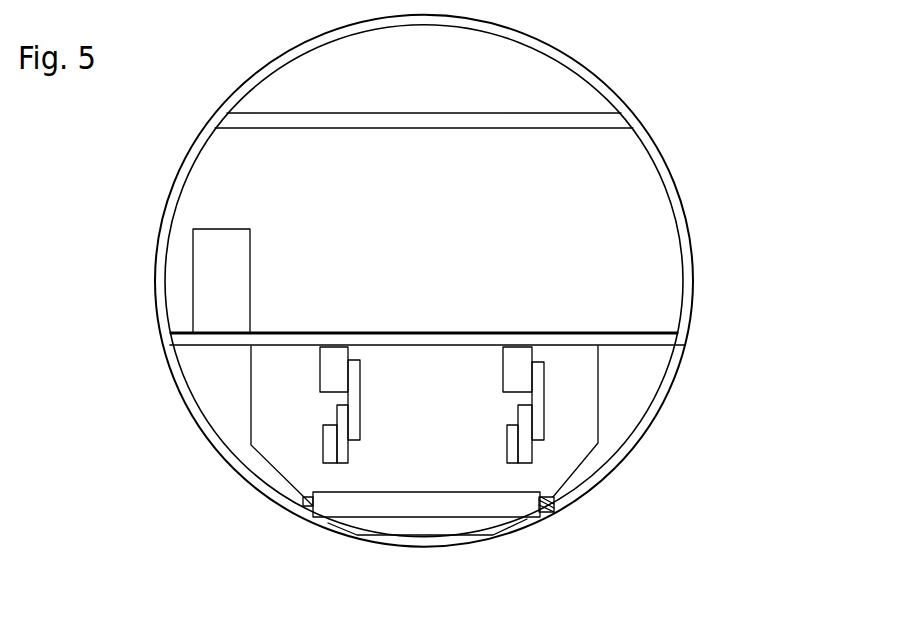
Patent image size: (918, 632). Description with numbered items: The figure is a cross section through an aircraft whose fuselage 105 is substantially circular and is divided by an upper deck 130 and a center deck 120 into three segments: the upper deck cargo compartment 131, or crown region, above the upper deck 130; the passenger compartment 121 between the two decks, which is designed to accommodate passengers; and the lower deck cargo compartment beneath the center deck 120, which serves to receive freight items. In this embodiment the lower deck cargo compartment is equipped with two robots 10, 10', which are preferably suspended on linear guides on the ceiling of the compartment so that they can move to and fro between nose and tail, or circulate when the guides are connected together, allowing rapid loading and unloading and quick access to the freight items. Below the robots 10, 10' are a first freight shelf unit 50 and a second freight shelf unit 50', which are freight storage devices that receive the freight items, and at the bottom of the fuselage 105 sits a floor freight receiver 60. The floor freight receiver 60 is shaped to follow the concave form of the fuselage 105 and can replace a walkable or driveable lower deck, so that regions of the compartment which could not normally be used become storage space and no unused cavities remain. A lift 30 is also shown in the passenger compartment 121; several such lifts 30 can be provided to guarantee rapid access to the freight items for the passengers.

The aircraft fuselage 105 is at (161, 249).
The upper deck cargo compartment 131 is at (430, 85).
The upper deck 130 is at (494, 120).
The passenger compartment 121 is at (485, 261).
The center deck 120 is at (495, 338).
The lift 30 is at (223, 305).
The first freight shelf unit 50 is at (166, 426).
The second freight shelf unit 50' is at (675, 426).
The robot 10 is at (219, 406).
The robot 10' is at (600, 446).
The floor freight receiver 60 is at (417, 503).